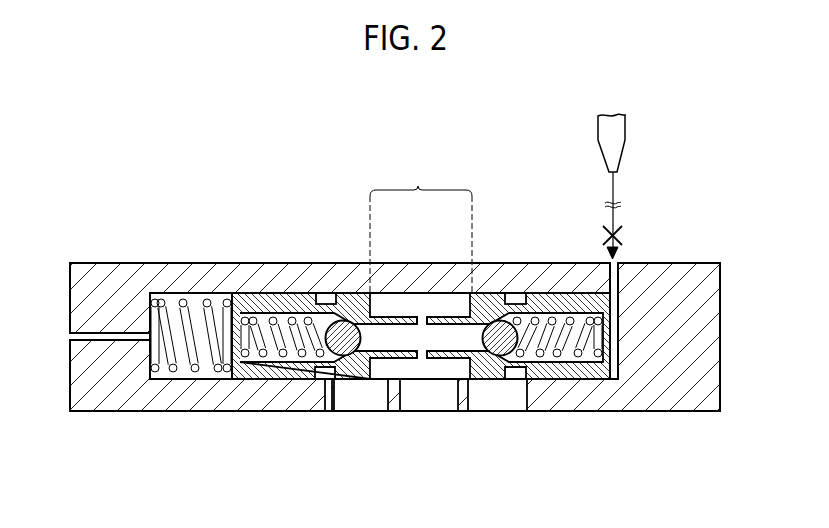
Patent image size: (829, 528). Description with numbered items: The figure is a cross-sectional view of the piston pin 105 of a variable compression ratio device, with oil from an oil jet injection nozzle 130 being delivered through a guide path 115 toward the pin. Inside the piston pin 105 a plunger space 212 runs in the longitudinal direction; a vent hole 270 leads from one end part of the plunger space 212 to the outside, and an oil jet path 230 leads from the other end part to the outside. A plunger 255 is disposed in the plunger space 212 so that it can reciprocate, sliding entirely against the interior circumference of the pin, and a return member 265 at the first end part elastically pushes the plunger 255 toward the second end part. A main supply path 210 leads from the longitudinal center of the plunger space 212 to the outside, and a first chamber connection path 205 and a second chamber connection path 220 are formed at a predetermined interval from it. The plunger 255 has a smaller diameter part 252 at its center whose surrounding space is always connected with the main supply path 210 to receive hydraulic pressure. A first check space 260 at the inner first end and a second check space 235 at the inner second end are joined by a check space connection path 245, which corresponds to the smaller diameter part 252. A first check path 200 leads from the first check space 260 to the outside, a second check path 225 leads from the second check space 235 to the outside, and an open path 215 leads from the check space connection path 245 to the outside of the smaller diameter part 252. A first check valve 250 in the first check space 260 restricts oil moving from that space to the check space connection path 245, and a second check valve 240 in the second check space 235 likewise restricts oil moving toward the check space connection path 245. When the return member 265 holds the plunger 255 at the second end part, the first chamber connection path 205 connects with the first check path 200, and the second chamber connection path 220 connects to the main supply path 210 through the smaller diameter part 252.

The piston pin 105 is at (90, 398).
The guide path 115 is at (614, 216).
The oil jet injection nozzle 130 is at (626, 125).
The first check path 200 is at (323, 383).
The first chamber connection path 205 is at (326, 412).
The main supply path 210 is at (392, 396).
The plunger space 212 is at (256, 382).
The open path 215 is at (422, 356).
The second chamber connection path 220 is at (467, 396).
The second check path 225 is at (517, 373).
The oil jet path 230 is at (615, 282).
The second check space 235 is at (557, 321).
The second check valve 240 is at (487, 327).
The check space connection path 245 is at (404, 333).
The first check valve 250 is at (336, 322).
The smaller diameter part 252 is at (421, 228).
The plunger 255 is at (292, 304).
The first check space 260 is at (260, 321).
The return member 265 is at (181, 300).
The vent hole 270 is at (97, 333).